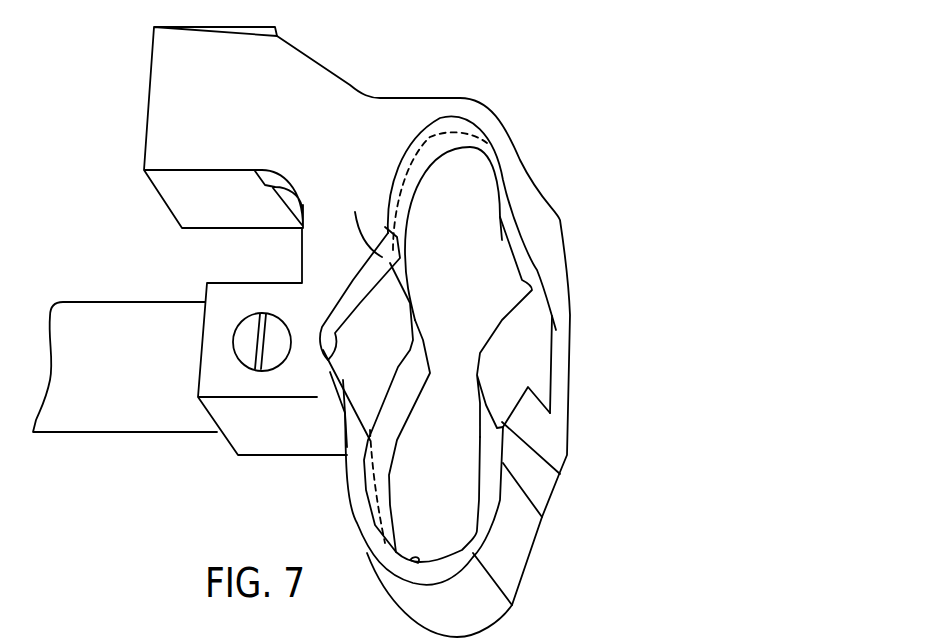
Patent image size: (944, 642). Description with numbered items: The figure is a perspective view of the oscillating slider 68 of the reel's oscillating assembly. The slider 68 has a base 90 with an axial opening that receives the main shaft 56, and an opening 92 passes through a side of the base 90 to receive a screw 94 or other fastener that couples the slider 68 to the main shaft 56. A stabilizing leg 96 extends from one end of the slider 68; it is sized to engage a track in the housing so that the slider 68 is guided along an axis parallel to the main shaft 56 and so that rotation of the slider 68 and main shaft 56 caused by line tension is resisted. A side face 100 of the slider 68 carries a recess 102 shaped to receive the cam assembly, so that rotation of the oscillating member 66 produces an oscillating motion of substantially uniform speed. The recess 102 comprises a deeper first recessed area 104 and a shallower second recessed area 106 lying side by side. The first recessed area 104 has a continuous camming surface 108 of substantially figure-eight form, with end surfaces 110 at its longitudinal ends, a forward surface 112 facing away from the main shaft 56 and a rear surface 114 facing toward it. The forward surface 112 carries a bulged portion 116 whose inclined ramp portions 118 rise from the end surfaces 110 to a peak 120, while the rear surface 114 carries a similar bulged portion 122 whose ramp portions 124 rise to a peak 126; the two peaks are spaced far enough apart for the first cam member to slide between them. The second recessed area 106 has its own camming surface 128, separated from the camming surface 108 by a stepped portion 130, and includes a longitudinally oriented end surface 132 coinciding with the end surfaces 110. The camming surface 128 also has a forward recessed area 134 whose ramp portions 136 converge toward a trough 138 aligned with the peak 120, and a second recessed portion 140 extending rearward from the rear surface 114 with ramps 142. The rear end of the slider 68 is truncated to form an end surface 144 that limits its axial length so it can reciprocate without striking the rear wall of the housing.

The main shaft 56 is at (88, 302).
The oscillating member 66 is at (516, 532).
The oscillating slider 68 is at (312, 51).
The base 90 is at (248, 457).
The opening 92 is at (283, 318).
The screw 94 is at (253, 323).
The stabilizing leg 96 is at (150, 54).
The side face 100 is at (360, 103).
The recess 102 is at (482, 183).
The first recessed area 104 is at (483, 253).
The second recessed area 106 is at (534, 318).
The camming surface 108 is at (412, 199).
The end surfaces 110 is at (460, 140).
The forward surface 112 is at (402, 472).
The rear surface 114 is at (480, 417).
The bulged portion 116 is at (393, 361).
The inclined ramp portions 118 is at (406, 292).
The peak 120 is at (427, 350).
The bulged portion 122 is at (492, 375).
The ramp portions 124 is at (503, 320).
The peak 126 is at (478, 377).
The camming surface 128 is at (356, 278).
The stepped portion 130 is at (402, 310).
The end surface 132 is at (437, 127).
The recessed area 134 is at (308, 361).
The ramp portions 136 is at (305, 478).
The trough 138 is at (328, 395).
The second recessed portion 140 is at (542, 333).
The ramps 142 is at (527, 277).
The end surface 144 is at (565, 472).